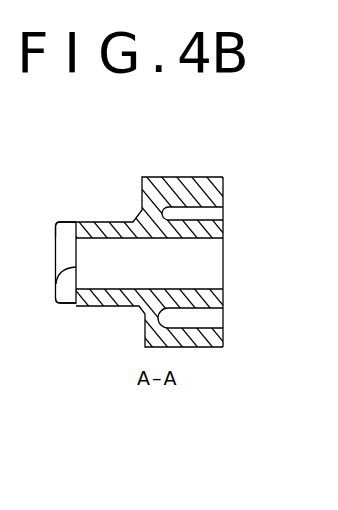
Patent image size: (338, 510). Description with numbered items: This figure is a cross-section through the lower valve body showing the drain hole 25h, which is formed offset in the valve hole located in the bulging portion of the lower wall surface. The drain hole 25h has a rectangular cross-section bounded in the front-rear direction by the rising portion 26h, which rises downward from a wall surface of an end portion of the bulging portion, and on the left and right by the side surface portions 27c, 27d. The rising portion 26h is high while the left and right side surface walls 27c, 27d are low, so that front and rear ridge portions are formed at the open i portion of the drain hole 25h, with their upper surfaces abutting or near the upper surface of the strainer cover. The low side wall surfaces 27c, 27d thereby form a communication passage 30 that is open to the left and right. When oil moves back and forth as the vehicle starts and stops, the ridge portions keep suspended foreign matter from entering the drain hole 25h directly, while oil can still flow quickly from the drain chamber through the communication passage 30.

The left side surface portion 27c is at (120, 221).
The right side surface portion 27d is at (108, 307).
The drain hole 25h is at (223, 265).
The communication passage 30 is at (60, 254).
The rising portion 26h is at (56, 237).
The open portion i is at (56, 282).